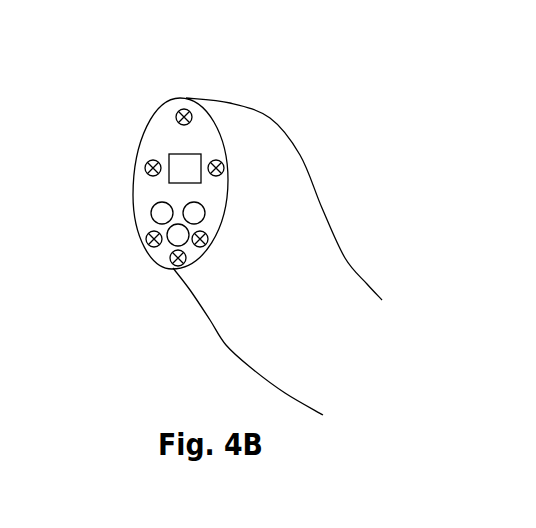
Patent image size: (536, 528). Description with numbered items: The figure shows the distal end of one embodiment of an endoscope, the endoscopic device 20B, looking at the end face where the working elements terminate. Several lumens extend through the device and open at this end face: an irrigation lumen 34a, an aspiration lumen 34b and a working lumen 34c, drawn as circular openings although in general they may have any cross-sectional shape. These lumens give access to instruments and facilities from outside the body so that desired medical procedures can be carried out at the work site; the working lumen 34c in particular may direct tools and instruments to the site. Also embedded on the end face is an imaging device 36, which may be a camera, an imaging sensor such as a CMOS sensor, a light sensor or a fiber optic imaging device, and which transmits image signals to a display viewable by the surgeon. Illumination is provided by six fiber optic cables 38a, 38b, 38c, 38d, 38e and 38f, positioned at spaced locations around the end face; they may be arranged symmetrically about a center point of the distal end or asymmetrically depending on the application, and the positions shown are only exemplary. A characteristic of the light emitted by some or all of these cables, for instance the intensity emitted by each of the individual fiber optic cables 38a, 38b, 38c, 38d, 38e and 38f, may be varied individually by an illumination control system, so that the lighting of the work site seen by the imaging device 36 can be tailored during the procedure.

The endoscopic device 20B is at (330, 203).
The imaging device 36 is at (169, 156).
The irrigation lumen 34a is at (122, 191).
The aspiration lumen 34b is at (256, 153).
The working lumen 34c is at (169, 245).
The fiber optic cable 38a is at (205, 80).
The fiber optic cable 38b is at (237, 121).
The fiber optic cable 38c is at (282, 176).
The fiber optic cable 38d is at (148, 289).
The fiber optic cable 38e is at (109, 245).
The fiber optic cable 38f is at (104, 143).